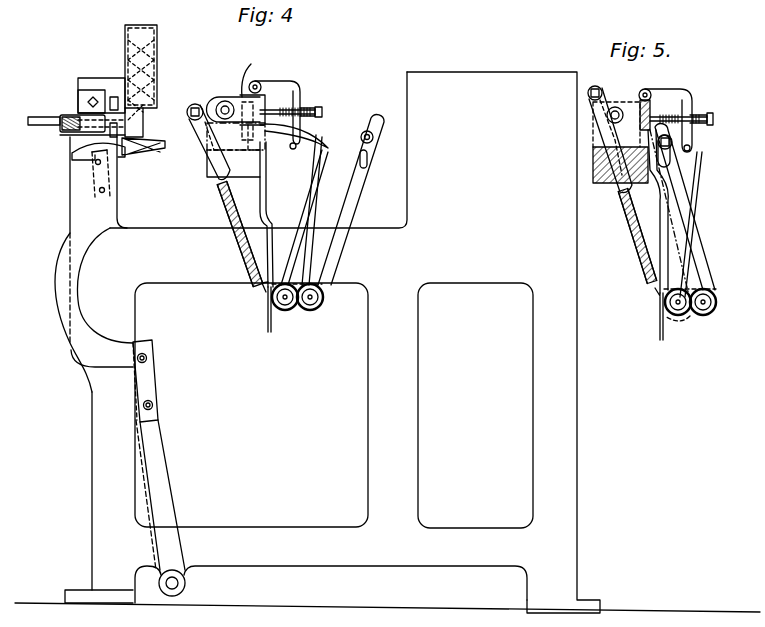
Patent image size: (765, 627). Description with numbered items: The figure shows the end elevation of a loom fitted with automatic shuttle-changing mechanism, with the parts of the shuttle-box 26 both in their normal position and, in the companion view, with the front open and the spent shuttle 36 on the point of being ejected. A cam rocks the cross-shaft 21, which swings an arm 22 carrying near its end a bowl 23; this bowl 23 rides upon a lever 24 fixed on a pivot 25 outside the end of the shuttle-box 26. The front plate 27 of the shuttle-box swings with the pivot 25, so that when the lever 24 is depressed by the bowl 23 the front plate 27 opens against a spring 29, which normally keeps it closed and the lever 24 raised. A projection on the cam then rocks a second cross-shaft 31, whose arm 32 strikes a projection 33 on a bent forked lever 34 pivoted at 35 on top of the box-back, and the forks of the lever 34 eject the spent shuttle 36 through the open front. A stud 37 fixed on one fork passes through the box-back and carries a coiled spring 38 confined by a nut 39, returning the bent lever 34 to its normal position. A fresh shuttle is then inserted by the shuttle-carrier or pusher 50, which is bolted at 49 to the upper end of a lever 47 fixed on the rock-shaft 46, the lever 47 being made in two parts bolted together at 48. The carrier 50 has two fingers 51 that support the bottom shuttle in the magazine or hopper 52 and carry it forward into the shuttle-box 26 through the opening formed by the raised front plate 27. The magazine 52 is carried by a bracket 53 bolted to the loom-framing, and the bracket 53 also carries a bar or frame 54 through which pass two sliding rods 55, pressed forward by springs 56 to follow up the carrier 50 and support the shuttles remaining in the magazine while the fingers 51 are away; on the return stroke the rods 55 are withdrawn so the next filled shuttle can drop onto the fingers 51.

In FIG. 4, the cross-shaft 21 is at (318, 308).
In FIG. 5, the cross-shaft 21 is at (698, 312).
In FIG. 4, the arm 22 is at (353, 192).
In FIG. 5, the arm 22 is at (700, 246).
In FIG. 4, the bowl 23 is at (374, 139).
In FIG. 5, the bowl 23 is at (673, 143).
In FIG. 4, the lever 24 is at (314, 128).
In FIG. 5, the lever 24 is at (659, 193).
In FIG. 4, the pivot 25 is at (227, 101).
In FIG. 5, the pivot 25 is at (617, 106).
In FIG. 4, the shuttle-box 26 is at (256, 72).
In FIG. 4, the front plate 27 is at (195, 130).
In FIG. 5, the front plate 27 is at (598, 118).
In FIG. 4, the spring 29 is at (222, 200).
In FIG. 5, the spring 29 is at (634, 215).
In FIG. 4, the second cross-shaft 31 is at (276, 308).
In FIG. 5, the second cross-shaft 31 is at (670, 313).
In FIG. 4, the arm 32 is at (312, 181).
In FIG. 5, the arm 32 is at (694, 177).
In FIG. 4, the projection 33 is at (293, 150).
In FIG. 5, the projection 33 is at (691, 150).
In FIG. 4, the bent forked lever 34 is at (295, 89).
In FIG. 5, the bent forked lever 34 is at (678, 89).
In FIG. 4, the pivot 35 is at (261, 85).
In FIG. 5, the pivot 35 is at (649, 91).
In FIG. 5, the spent shuttle 36 is at (596, 160).
In FIG. 4, the stud 37 is at (283, 110).
In FIG. 5, the stud 37 is at (672, 117).
In FIG. 4, the coiled spring 38 is at (306, 110).
In FIG. 5, the coiled spring 38 is at (690, 115).
In FIG. 4, the nut 39 is at (323, 112).
In FIG. 5, the nut 39 is at (714, 118).
In FIG. 4, the rock-shaft 46 is at (185, 585).
In FIG. 4, the lever 47 is at (70, 283).
In FIG. 4, the bolt 48 is at (135, 143).
In FIG. 4, the bolt 49 is at (97, 165).
In FIG. 4, the shuttle-carrier or pusher 50 is at (120, 160).
In FIG. 4, the fingers 51 is at (152, 150).
In FIG. 4, the magazine or hopper 52 is at (141, 81).
In FIG. 4, the bracket 53 is at (92, 82).
In FIG. 4, the bar or frame 54 is at (66, 132).
In FIG. 4, the sliding rods 55 is at (44, 126).
In FIG. 4, the springs 56 is at (66, 116).